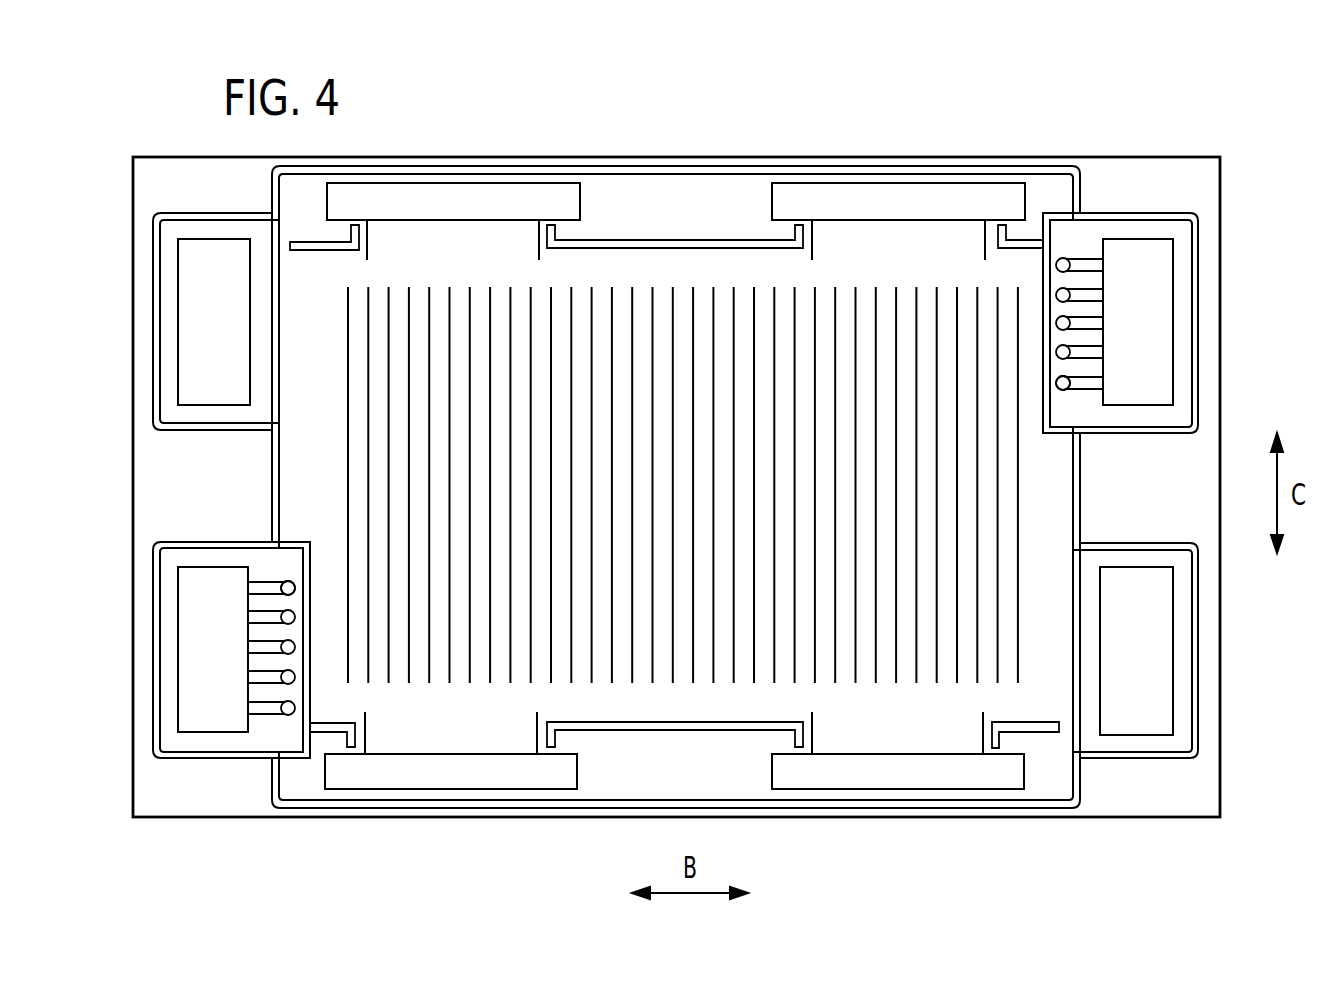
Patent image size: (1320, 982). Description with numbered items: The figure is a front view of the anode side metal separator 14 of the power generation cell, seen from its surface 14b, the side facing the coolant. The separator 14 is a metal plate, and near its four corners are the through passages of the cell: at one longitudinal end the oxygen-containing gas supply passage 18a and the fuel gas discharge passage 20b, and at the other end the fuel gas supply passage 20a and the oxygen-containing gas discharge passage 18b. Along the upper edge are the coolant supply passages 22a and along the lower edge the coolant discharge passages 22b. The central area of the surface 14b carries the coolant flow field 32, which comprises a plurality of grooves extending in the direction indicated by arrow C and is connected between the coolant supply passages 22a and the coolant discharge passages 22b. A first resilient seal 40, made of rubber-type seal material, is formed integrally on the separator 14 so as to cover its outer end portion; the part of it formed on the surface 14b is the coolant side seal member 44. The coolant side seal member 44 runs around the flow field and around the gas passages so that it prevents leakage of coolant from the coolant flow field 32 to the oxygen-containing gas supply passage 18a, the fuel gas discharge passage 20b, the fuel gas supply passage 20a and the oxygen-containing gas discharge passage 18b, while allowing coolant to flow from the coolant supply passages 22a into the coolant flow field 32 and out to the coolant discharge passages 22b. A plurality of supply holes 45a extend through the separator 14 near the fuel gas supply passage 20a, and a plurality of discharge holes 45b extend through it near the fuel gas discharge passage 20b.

The anode side metal separator 14 is at (646, 123).
The surface 14b is at (1135, 785).
The oxygen-containing gas supply passage 18a is at (216, 321).
The oxygen-containing gas discharge passage 18b is at (1135, 650).
The fuel gas supply passage 20a is at (1120, 323).
The fuel gas discharge passage 20b is at (231, 650).
The coolant supply passages 22a is at (666, 221).
The coolant discharge passages 22b is at (684, 751).
The coolant flow field 32 is at (660, 300).
The first resilient seal 40 is at (207, 818).
The coolant side seal member 44 is at (850, 170).
The supply holes 45a is at (1060, 391).
The discharge holes 45b is at (290, 580).